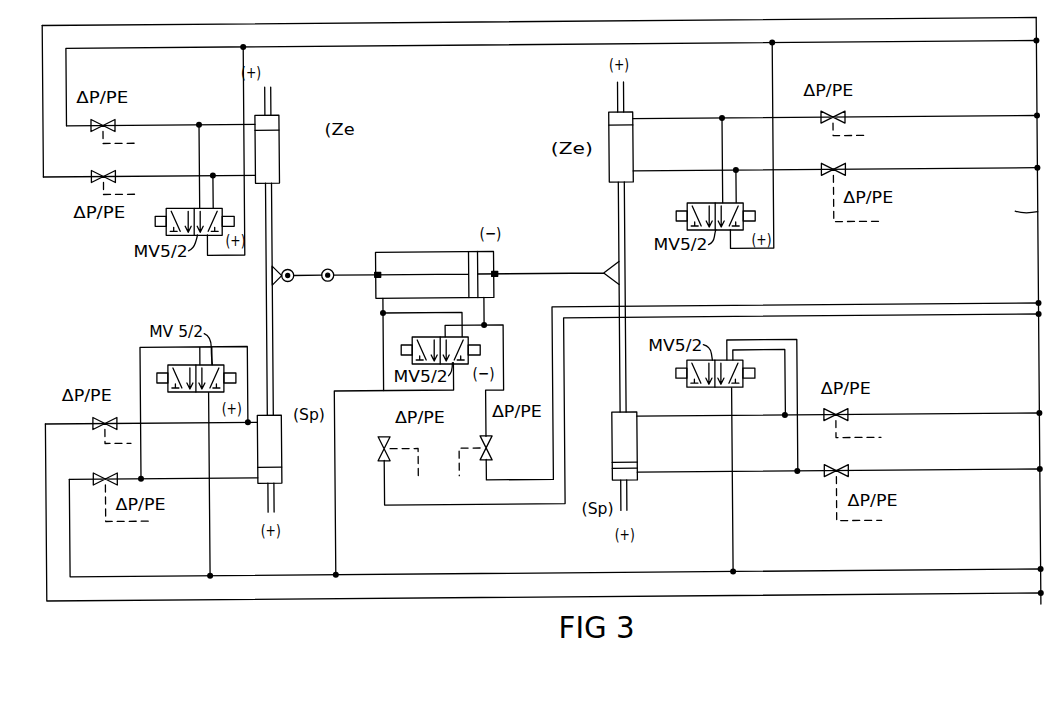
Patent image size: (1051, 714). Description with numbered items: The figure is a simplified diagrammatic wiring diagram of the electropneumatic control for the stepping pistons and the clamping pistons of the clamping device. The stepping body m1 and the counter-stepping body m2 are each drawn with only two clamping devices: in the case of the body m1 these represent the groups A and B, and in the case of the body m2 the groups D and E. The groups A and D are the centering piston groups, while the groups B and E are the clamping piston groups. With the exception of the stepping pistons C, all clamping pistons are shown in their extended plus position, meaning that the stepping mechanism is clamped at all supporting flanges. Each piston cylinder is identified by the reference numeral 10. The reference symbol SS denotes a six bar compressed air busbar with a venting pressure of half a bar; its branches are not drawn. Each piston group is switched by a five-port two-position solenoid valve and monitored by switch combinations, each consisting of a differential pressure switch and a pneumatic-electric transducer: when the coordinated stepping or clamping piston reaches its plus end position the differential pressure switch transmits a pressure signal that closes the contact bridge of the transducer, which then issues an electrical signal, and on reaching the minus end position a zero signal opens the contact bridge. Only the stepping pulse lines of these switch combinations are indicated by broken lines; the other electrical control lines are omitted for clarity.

The pneumatic cylinder 10 is at (474, 287).
The centering piston group A is at (594, 108).
The clamping piston group B is at (623, 461).
The stepping piston C is at (436, 260).
The centering piston group D is at (295, 184).
The clamping piston group E is at (281, 441).
The stepping body m1 is at (633, 287).
The counter-stepping body m2 is at (289, 287).
The compressed air busbar SS is at (1038, 248).